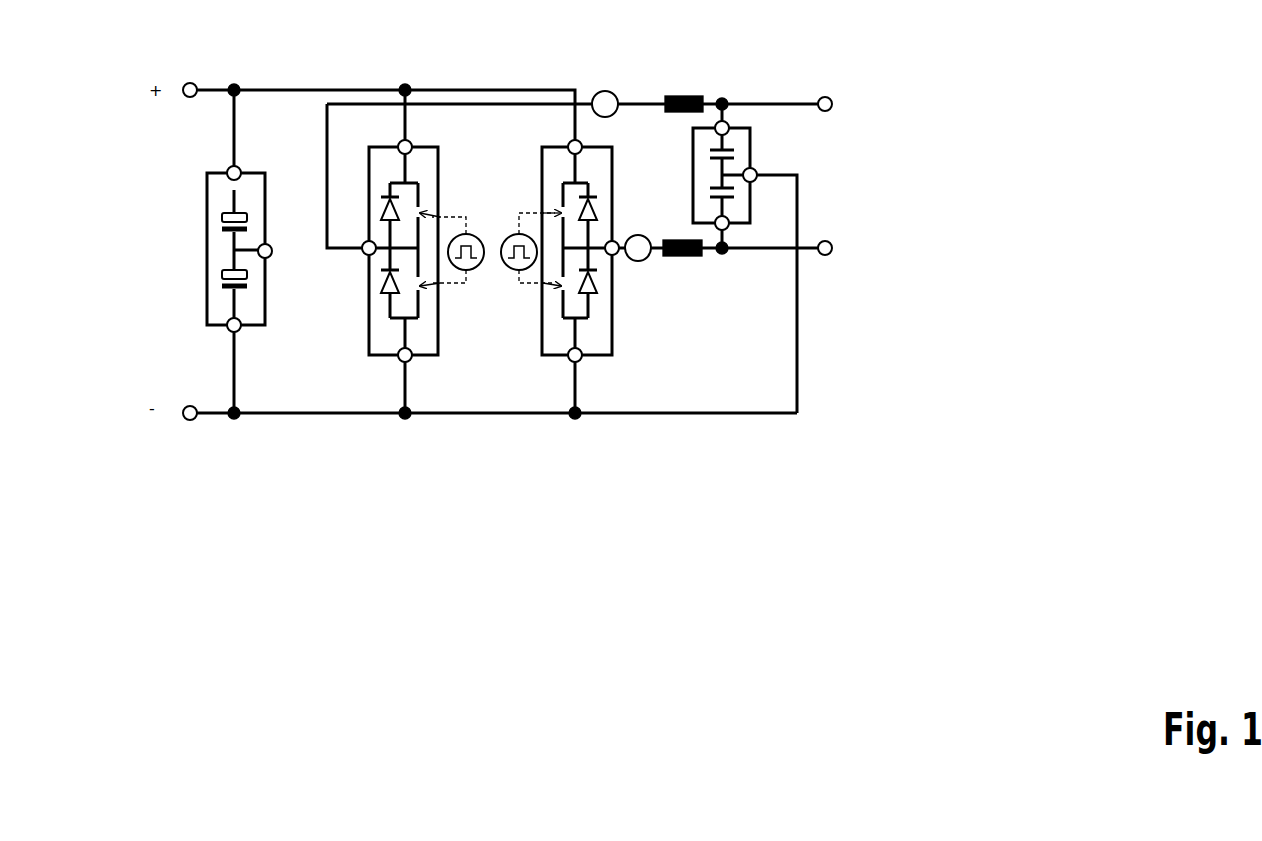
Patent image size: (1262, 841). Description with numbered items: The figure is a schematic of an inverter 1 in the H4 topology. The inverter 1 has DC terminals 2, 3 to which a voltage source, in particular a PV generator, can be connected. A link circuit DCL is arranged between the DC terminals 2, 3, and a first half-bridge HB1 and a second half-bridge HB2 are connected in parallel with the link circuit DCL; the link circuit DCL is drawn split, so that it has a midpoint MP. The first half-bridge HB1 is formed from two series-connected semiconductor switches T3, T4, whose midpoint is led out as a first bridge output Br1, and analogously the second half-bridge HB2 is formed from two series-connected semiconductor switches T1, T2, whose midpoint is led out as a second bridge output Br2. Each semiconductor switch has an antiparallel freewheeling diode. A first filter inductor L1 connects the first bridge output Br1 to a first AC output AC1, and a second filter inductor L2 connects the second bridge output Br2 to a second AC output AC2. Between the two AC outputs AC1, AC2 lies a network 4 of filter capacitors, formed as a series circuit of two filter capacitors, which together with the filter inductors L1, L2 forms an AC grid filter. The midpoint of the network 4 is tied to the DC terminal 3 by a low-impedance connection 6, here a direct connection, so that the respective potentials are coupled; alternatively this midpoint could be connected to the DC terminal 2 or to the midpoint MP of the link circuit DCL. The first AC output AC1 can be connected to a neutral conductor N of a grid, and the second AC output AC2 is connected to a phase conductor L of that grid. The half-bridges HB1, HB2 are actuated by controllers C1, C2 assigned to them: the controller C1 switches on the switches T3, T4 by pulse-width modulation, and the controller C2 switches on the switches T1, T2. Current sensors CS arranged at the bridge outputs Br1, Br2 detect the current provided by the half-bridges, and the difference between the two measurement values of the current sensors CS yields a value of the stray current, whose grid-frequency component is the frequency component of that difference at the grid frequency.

The inverter 1 is at (652, 56).
The DC terminal 2 is at (408, 88).
The DC terminal 3 is at (408, 415).
The network of filter capacitors 4 is at (756, 172).
The low-impedance connection 6 is at (800, 320).
The link circuit DCL is at (207, 248).
The midpoint of link circuit MP is at (270, 247).
The first half-bridge HB1 is at (542, 325).
The second half-bridge HB2 is at (442, 175).
The semiconductor switch T1 is at (386, 196).
The semiconductor switch T2 is at (412, 290).
The semiconductor switch T3 is at (565, 211).
The semiconductor switch T4 is at (568, 297).
The first bridge output Br1 is at (615, 241).
The second bridge output Br2 is at (366, 256).
The controller C1 is at (513, 231).
The controller C2 is at (478, 269).
The current sensor CS is at (596, 92).
The first filter inductor L1 is at (734, 259).
The second filter inductor L2 is at (718, 92).
The first AC output AC1 is at (724, 255).
The second AC output AC2 is at (727, 122).
The phase conductor L is at (837, 104).
The neutral conductor N is at (839, 248).